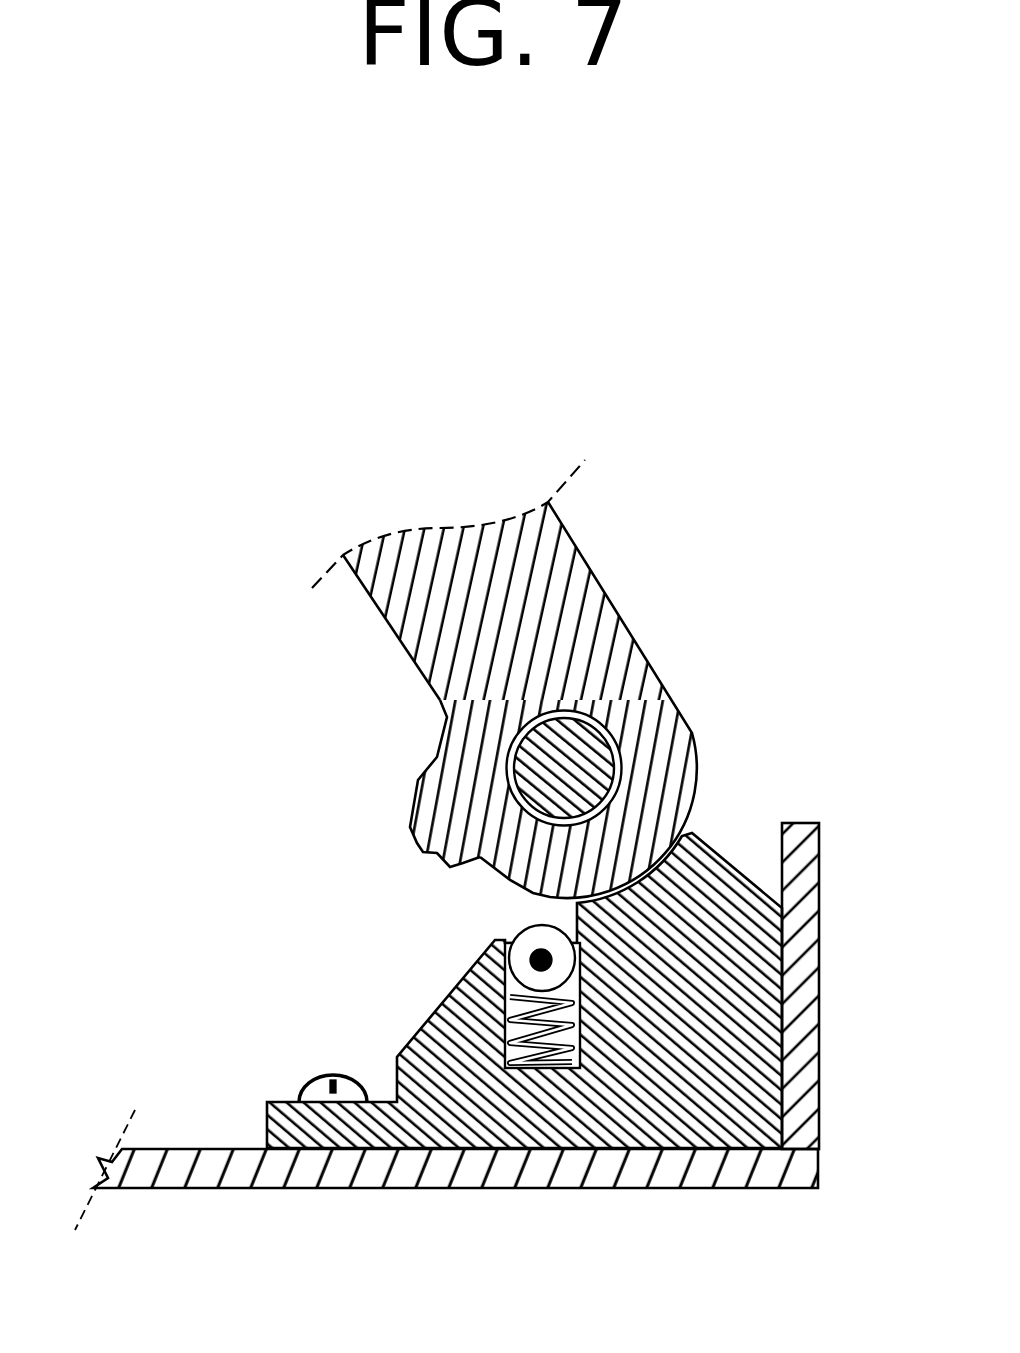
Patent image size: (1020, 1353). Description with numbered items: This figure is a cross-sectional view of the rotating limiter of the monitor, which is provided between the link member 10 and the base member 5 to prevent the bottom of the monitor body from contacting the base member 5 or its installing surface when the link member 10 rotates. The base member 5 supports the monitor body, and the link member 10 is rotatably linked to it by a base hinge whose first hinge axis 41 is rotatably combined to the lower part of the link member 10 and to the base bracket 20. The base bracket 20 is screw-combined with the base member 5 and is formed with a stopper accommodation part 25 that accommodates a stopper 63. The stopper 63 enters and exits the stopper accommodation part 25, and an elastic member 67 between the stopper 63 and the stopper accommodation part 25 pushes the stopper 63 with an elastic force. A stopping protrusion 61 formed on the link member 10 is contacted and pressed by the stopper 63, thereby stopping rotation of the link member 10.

The base member 5 is at (217, 1190).
The link member 10 is at (557, 592).
The base bracket 20 is at (717, 1115).
The stopper accommodation part 25 is at (612, 1010).
The first hinge axis 41 is at (603, 753).
The stopping protrusion 61 is at (413, 838).
The stopper 63 is at (515, 980).
The elastic member 67 is at (560, 1066).